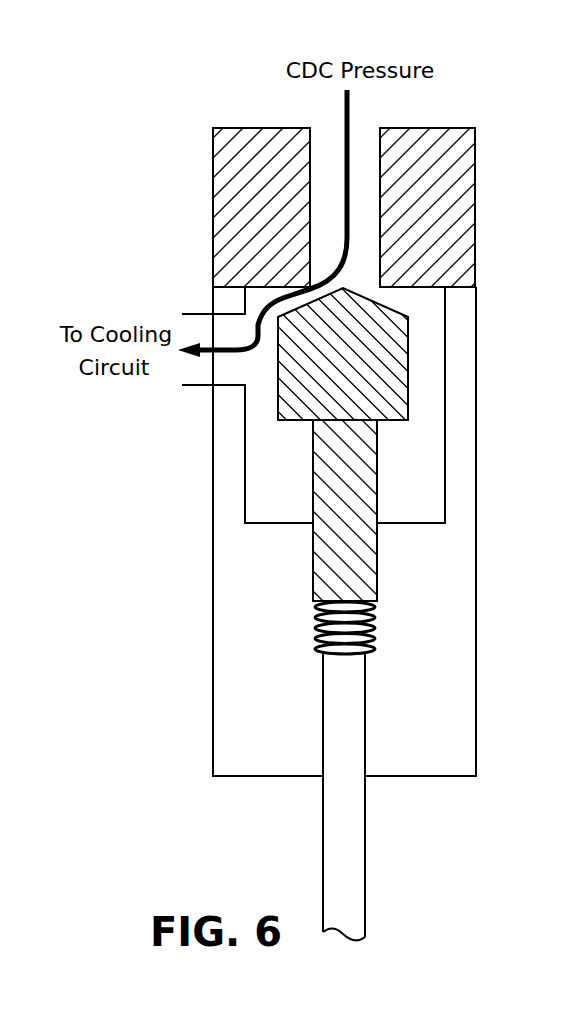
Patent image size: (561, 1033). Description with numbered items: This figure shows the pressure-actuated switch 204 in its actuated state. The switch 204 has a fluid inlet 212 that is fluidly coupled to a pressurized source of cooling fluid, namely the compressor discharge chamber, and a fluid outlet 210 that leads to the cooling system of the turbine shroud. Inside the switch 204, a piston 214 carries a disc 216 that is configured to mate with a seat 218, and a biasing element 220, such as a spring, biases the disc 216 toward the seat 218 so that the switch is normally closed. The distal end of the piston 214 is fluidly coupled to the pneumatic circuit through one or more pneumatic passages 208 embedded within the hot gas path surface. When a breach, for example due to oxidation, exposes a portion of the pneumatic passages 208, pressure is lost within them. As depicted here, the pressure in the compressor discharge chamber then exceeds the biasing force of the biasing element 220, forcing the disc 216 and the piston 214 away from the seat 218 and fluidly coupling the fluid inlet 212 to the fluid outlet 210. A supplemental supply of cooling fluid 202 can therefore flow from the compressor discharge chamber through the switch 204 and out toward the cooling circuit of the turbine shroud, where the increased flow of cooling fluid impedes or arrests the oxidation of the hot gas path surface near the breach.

The supplemental supply of cooling fluid 202 is at (353, 127).
The pressure-actuated switch 204 is at (150, 200).
The pneumatic passages 208 is at (366, 848).
The fluid outlet 210 is at (190, 388).
The fluid inlet 212 is at (315, 138).
The piston 214 is at (377, 473).
The disc 216 is at (408, 350).
The seat 218 is at (390, 288).
The biasing element 220 is at (375, 633).